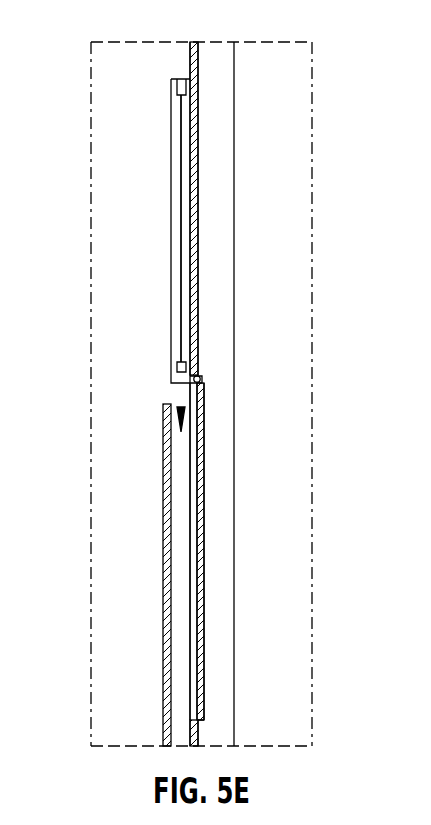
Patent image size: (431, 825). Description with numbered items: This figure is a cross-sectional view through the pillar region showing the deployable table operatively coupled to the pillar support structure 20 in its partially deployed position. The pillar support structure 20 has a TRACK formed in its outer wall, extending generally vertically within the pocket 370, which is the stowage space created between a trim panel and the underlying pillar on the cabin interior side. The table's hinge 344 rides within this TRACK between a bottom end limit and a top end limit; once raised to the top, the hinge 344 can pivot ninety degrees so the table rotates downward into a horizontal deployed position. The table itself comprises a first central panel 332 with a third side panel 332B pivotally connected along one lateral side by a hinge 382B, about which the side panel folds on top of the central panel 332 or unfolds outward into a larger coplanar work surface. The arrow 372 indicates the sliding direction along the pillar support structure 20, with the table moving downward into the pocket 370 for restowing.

The pillar support structure 20 is at (190, 60).
The hinge 382B is at (176, 88).
The third side panel 332B is at (181, 173).
The first central panel 332 is at (175, 237).
The hinge 344 is at (200, 380).
The direction arrow 372 is at (181, 407).
The pocket 370 is at (163, 448).
The track TRACK is at (196, 632).